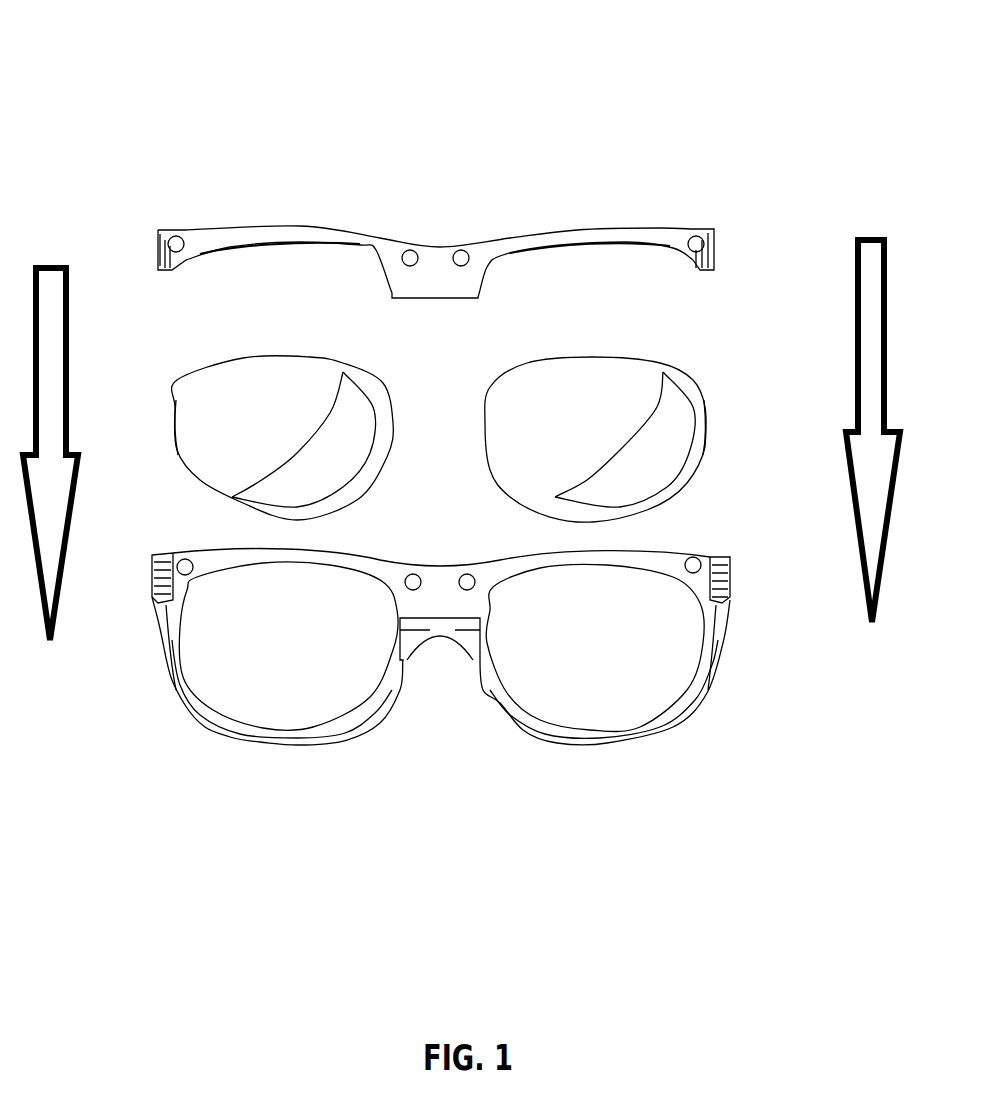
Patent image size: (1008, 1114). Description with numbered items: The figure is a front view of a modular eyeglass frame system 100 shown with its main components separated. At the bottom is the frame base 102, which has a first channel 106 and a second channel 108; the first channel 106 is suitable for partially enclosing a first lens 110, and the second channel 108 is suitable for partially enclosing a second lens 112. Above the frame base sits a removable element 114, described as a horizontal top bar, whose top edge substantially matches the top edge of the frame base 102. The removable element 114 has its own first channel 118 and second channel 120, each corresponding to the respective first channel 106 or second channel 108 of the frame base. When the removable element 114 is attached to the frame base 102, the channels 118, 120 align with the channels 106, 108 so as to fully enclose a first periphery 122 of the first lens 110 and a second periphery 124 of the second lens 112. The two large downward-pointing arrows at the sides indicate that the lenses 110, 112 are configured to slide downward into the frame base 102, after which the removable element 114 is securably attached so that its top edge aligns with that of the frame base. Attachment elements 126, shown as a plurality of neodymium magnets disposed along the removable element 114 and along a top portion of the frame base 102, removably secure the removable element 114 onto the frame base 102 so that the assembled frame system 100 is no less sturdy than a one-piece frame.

The modular eyeglass frame system 100 is at (72, 62).
The frame base 102 is at (735, 585).
The first channel 106 is at (275, 730).
The second channel 108 is at (610, 730).
The first lens 110 is at (255, 438).
The second lens 112 is at (624, 439).
The removable element 114 is at (722, 243).
The first channel 118 is at (268, 245).
The second channel 120 is at (590, 243).
The first periphery 122 is at (177, 433).
The second periphery 124 is at (705, 428).
The attachment elements 126 is at (176, 237).